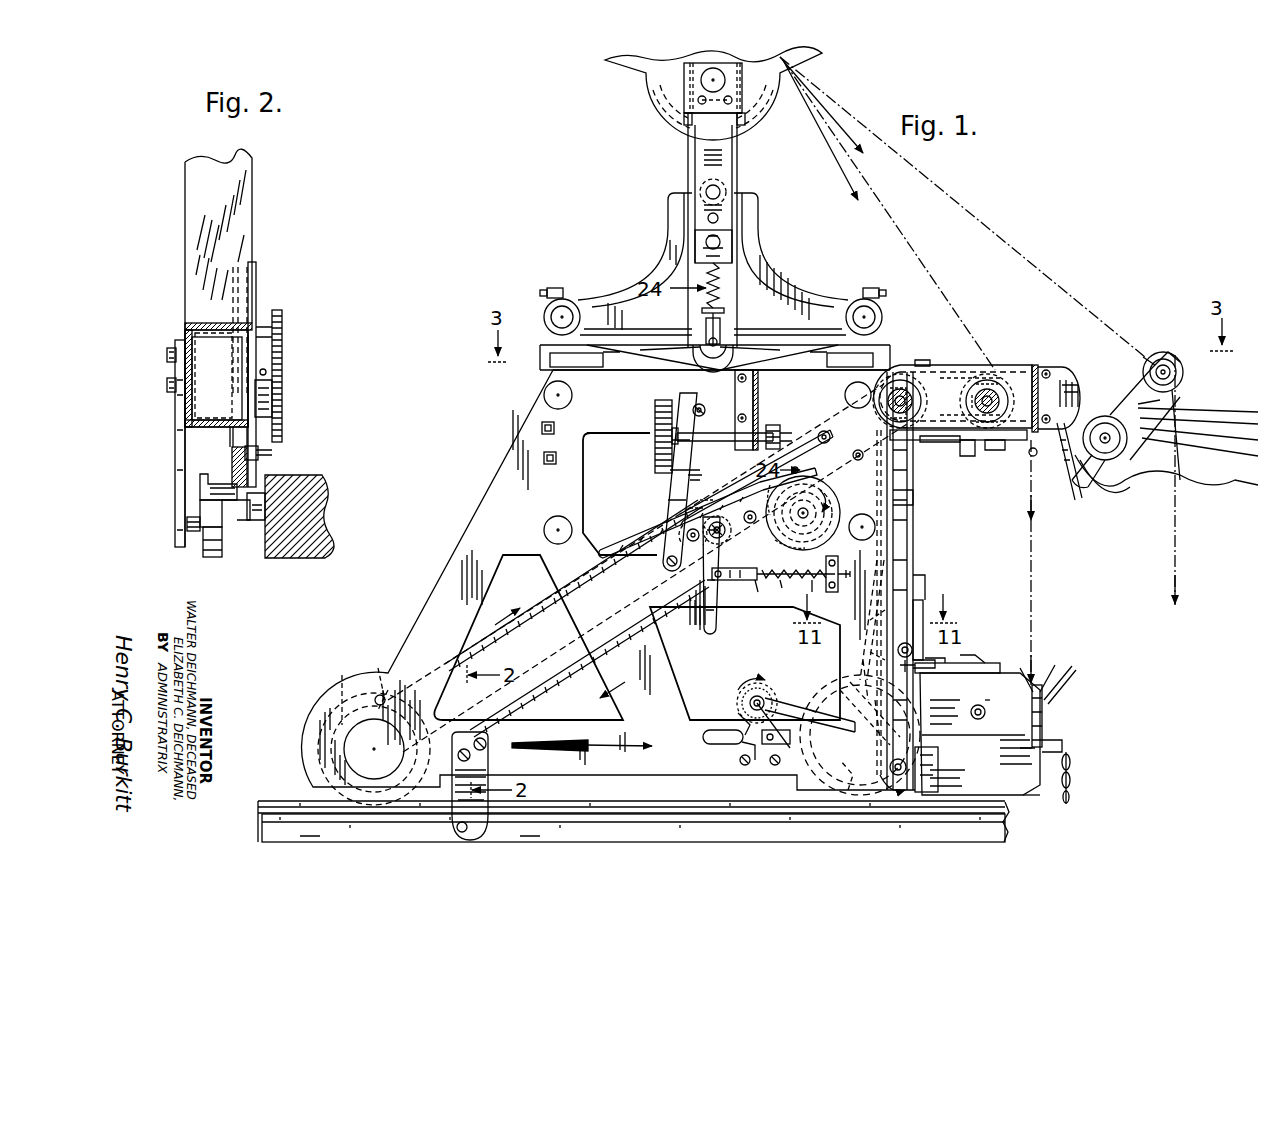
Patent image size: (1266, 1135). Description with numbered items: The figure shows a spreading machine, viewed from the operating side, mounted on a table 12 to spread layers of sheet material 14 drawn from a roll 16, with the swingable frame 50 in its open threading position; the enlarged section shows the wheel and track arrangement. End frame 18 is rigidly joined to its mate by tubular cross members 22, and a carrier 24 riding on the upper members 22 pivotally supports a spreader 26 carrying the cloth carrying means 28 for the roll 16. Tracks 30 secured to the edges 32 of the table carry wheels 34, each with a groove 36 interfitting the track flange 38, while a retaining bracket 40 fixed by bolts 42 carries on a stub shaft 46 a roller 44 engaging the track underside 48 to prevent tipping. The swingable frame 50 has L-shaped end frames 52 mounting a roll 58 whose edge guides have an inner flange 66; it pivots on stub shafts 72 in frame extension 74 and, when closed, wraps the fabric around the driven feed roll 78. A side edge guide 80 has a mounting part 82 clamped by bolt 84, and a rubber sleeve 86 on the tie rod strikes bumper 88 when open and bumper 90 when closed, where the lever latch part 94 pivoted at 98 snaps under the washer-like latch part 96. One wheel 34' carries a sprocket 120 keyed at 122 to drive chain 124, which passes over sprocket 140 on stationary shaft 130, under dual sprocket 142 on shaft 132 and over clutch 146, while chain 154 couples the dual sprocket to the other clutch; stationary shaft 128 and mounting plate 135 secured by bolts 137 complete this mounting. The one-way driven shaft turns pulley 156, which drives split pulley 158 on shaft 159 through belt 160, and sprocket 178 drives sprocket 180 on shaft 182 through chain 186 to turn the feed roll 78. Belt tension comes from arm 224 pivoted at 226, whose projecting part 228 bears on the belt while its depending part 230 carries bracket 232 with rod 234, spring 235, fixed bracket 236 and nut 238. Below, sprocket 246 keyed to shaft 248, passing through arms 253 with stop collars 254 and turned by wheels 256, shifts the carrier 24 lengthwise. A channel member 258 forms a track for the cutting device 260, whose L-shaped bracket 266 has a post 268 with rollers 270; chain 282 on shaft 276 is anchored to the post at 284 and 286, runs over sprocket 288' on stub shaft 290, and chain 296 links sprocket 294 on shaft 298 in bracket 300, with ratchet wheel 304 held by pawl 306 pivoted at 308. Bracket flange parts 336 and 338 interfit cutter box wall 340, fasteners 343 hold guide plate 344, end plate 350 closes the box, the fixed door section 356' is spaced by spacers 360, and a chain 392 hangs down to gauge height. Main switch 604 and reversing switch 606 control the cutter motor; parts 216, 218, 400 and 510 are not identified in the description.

In FIG. 2, the table 12 is at (318, 477).
In FIG. 1, the table 12 is at (275, 795).
In FIG. 1, the sheet material 14 is at (912, 160).
In FIG. 1, the roll 16 is at (762, 108).
In FIG. 2, the end frame 18 is at (243, 190).
In FIG. 1, the end frame 18 is at (455, 565).
In FIG. 1, the tubular cross members 22 is at (560, 393).
In FIG. 1, the carrier 24 is at (665, 358).
In FIG. 1, the spreader 26 is at (760, 268).
In FIG. 1, the cloth carrying means 28 is at (668, 250).
In FIG. 2, the tracks 30 is at (200, 478).
In FIG. 1, the tracks 30 is at (290, 827).
In FIG. 2, the opposite edges 32 is at (266, 555).
In FIG. 1, the opposite edges 32 is at (545, 840).
In FIG. 1, the wheels 34 is at (836, 800).
In FIG. 2, the wheel 34' is at (273, 359).
In FIG. 1, the wheel 34' is at (612, 568).
In FIG. 2, the groove 36 is at (258, 452).
In FIG. 1, the groove 36 is at (322, 715).
In FIG. 2, the flange 38 is at (235, 474).
In FIG. 2, the retaining bracket 40 is at (173, 412).
In FIG. 1, the retaining bracket 40 is at (490, 765).
In FIG. 2, the bolts 42 is at (167, 386).
In FIG. 1, the bolts 42 is at (487, 742).
In FIG. 2, the roller 44 is at (212, 560).
In FIG. 1, the roller 44 is at (452, 826).
In FIG. 2, the stub shaft 46 is at (193, 552).
In FIG. 2, the underside 48 is at (200, 506).
In FIG. 1, the swingable frame 50 is at (1105, 465).
In FIG. 1, the L-shaped end frame 52 is at (1170, 410).
In FIG. 1, the roll 58 is at (1170, 355).
In FIG. 1, the peripheral inner flange 66 is at (1150, 357).
In FIG. 1, the stub shafts 72 is at (1066, 368).
In FIG. 1, the frame extension 74 is at (940, 365).
In FIG. 1, the feed roll 78 is at (975, 445).
In FIG. 1, the side edge guide 80 is at (1225, 490).
In FIG. 1, the mounting part 82 is at (1188, 446).
In FIG. 1, the bolt 84 is at (1185, 434).
In FIG. 1, the sleeve 86 is at (1112, 420).
In FIG. 1, the bumper 88 is at (1083, 465).
In FIG. 1, the bumper 90 is at (978, 372).
In FIG. 1, the latch part 94 is at (1180, 422).
In FIG. 1, the latch part 96 is at (922, 360).
In FIG. 1, the pivot 98 is at (1157, 407).
In FIG. 2, the sprocket 120 is at (283, 378).
In FIG. 1, the sprocket 120 is at (383, 680).
In FIG. 2, the key 122 is at (265, 372).
In FIG. 1, the chain 124 is at (545, 668).
In FIG. 1, the stationary shaft 128 is at (798, 440).
In FIG. 1, the stationary shaft 130 is at (688, 530).
In FIG. 1, the stationary shaft 132 is at (690, 480).
In FIG. 1, the mounting plate 135 is at (668, 490).
In FIG. 1, the bolts 137 is at (669, 408).
In FIG. 1, the sprocket 140 is at (650, 535).
In FIG. 1, the dual sprocket 142 is at (762, 498).
In FIG. 1, the clutch 146 is at (820, 538).
In FIG. 1, the endless chain 154 is at (760, 520).
In FIG. 1, the pulley 156 is at (795, 580).
In FIG. 1, the pulley 158 is at (893, 378).
In FIG. 1, the mounting shaft 159 is at (908, 383).
In FIG. 1, the belt 160 is at (900, 500).
In FIG. 1, the sprocket 178 is at (950, 440).
In FIG. 1, the sprocket 180 is at (1000, 440).
In FIG. 1, the shaft 182 is at (1000, 385).
In FIG. 1, the chain 186 is at (982, 372).
In FIG. 1, the pin 216 is at (860, 450).
In FIG. 1, the lever 218 is at (1060, 390).
In FIG. 1, the arm 224 is at (800, 415).
In FIG. 1, the pivot 226 is at (716, 518).
In FIG. 1, the laterally projecting part 228 is at (828, 432).
In FIG. 1, the depending part 230 is at (715, 612).
In FIG. 1, the bracket 232 is at (742, 582).
In FIG. 1, the rod 234 is at (785, 585).
In FIG. 1, the spring 235 is at (760, 590).
In FIG. 1, the bracket 236 is at (820, 588).
In FIG. 1, the nut 238 is at (832, 576).
In FIG. 1, the sprocket 246 is at (742, 410).
In FIG. 1, the shaft 248 is at (700, 404).
In FIG. 1, the spaced arms 253 is at (762, 412).
In FIG. 1, the stop collars 254 is at (760, 425).
In FIG. 1, the wheels 256 is at (655, 437).
In FIG. 1, the U-shaped channel member 258 is at (925, 572).
In FIG. 1, the cloth cutting device 260 is at (1032, 786).
In FIG. 1, the L-shaped mounting bracket 266 is at (965, 668).
In FIG. 1, the upright post 268 is at (925, 620).
In FIG. 1, the rollers 270 is at (915, 610).
In FIG. 1, the shaft 276 is at (790, 462).
In FIG. 1, the chain 282 is at (870, 650).
In FIG. 1, the anchor point 284 is at (955, 720).
In FIG. 1, the anchor point 286 is at (866, 650).
In FIG. 1, the sprocket 288' is at (947, 769).
In FIG. 1, the stub shaft 290 is at (890, 768).
In FIG. 1, the sprocket 294 is at (808, 710).
In FIG. 1, the chain 296 is at (795, 695).
In FIG. 1, the shaft 298 is at (750, 700).
In FIG. 1, the bracket 300 is at (770, 732).
In FIG. 1, the ratchet wheel 304 is at (780, 678).
In FIG. 1, the pawl 306 is at (715, 745).
In FIG. 1, the pivot 308 is at (740, 720).
In FIG. 1, the mounting flange part 336 is at (946, 639).
In FIG. 1, the mounting flange part 338 is at (976, 690).
In FIG. 1, the wall 340 is at (1000, 668).
In FIG. 1, the fasteners 343 is at (915, 660).
In FIG. 1, the guide plate 344 is at (957, 671).
In FIG. 1, the end plate 350 is at (1038, 710).
In FIG. 1, the fixed door section 356' is at (1075, 677).
In FIG. 1, the spacers 360 is at (1040, 720).
In FIG. 1, the length of chain 392 is at (1072, 768).
In FIG. 1, the fork 400 is at (1036, 682).
In FIG. 1, the nut 510 is at (985, 708).
In FIG. 1, the main switch 604 is at (542, 428).
In FIG. 1, the reversing switch 606 is at (544, 458).